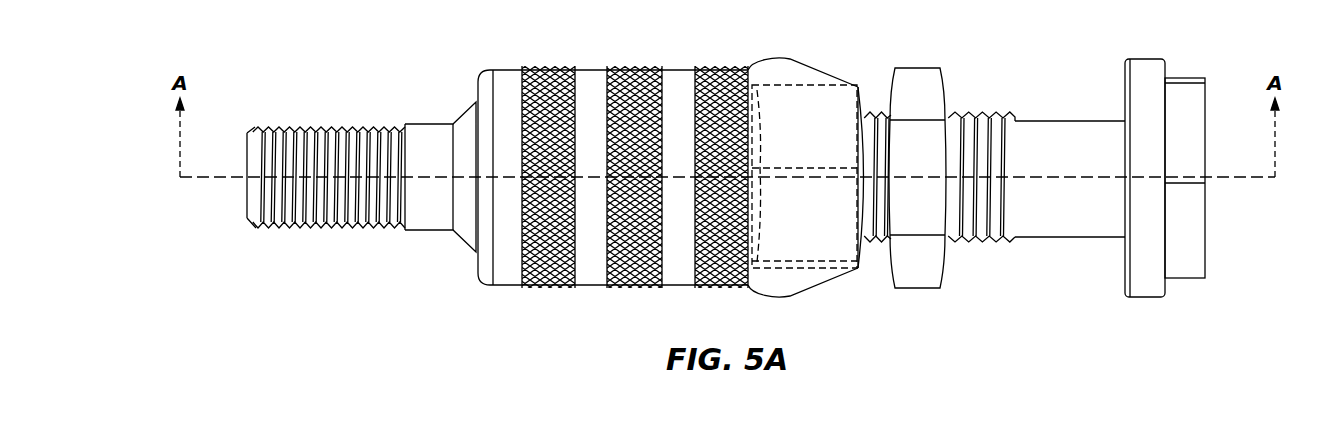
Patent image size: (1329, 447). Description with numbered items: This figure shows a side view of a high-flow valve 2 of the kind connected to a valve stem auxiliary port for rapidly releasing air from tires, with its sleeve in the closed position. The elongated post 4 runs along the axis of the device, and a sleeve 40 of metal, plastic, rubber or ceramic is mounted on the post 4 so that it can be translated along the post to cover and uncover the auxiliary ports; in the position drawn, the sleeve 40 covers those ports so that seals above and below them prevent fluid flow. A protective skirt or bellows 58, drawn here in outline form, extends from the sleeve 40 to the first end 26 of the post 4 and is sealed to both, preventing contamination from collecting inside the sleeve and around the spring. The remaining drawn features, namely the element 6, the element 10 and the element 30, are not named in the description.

The connector assembly 2 is at (374, 82).
The post 4 is at (465, 243).
The mounting flange end 6 is at (1183, 77).
The hex nut 10 is at (930, 68).
The first end 26 is at (862, 88).
The threaded portion 30 is at (292, 228).
The sleeve 40 is at (486, 70).
The bellows 58 is at (798, 63).